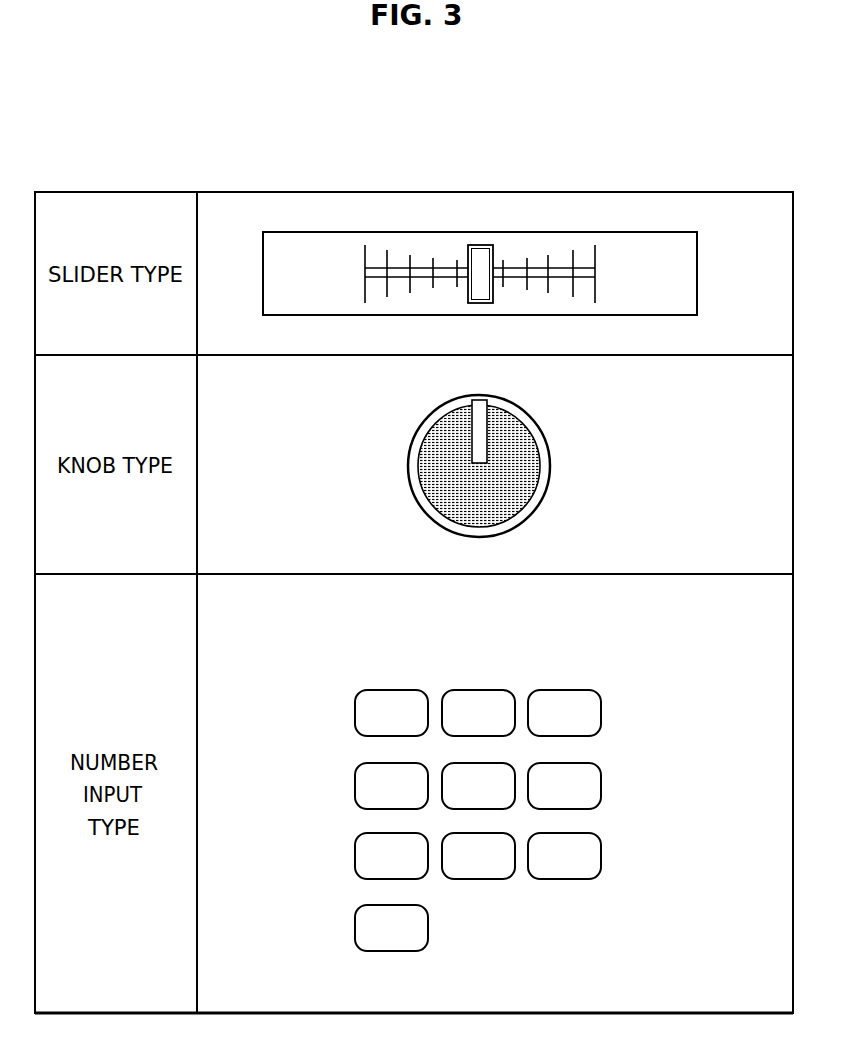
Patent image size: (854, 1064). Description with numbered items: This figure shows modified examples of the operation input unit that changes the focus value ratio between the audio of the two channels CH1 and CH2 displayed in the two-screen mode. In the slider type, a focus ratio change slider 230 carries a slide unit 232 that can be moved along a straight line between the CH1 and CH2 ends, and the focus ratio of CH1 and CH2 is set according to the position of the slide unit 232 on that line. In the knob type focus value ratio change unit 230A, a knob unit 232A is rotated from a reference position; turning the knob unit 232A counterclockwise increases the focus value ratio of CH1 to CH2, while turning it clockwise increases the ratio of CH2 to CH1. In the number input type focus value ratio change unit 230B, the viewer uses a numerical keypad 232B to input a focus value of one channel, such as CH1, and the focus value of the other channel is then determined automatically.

The focus ratio change slider 230 is at (697, 272).
The slide unit 232 is at (478, 246).
The knob type focus value ratio change unit 230A is at (563, 465).
The knob unit 232A is at (476, 400).
The number input type focus value ratio change unit 230B is at (553, 792).
The numerical keypad 232B is at (392, 690).